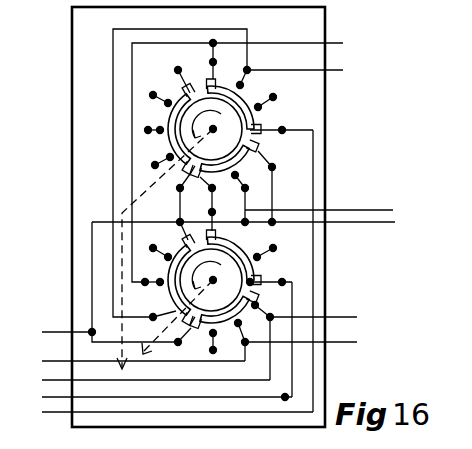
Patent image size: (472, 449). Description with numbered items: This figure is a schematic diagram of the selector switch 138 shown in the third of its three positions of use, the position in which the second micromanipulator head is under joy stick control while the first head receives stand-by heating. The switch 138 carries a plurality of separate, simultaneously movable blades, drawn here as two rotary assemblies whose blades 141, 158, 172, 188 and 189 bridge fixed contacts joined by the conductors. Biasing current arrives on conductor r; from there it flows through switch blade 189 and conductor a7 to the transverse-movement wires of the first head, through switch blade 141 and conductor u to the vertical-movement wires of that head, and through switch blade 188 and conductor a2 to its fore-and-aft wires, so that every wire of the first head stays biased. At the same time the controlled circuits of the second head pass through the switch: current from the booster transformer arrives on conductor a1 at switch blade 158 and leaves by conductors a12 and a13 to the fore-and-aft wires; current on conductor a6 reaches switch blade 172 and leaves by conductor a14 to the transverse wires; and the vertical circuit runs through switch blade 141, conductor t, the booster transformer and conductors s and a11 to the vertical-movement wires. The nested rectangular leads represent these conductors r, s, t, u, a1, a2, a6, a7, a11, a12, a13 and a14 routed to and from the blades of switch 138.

The selector switch 138 is at (325, 19).
The switch blade 158 is at (253, 113).
The switch blade 172 is at (255, 263).
The switch blade 188 is at (176, 270).
The switch blade 189 is at (194, 207).
The switch blade 141 is at (211, 280).
The conductor a1 is at (220, 267).
The conductor a2 is at (305, 72).
The conductor a6 is at (158, 343).
The conductor a7 is at (253, 228).
The conductor a11 is at (313, 337).
The conductor a12 is at (234, 73).
The conductor a13 is at (289, 39).
The conductor a14 is at (220, 204).
The conductor r is at (110, 284).
The conductor s is at (137, 355).
The conductor t is at (150, 352).
The conductor u is at (316, 313).